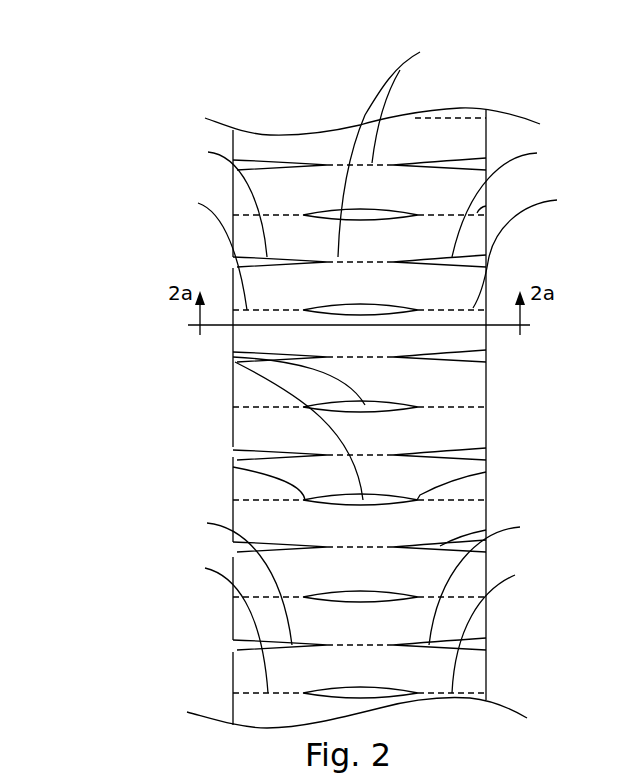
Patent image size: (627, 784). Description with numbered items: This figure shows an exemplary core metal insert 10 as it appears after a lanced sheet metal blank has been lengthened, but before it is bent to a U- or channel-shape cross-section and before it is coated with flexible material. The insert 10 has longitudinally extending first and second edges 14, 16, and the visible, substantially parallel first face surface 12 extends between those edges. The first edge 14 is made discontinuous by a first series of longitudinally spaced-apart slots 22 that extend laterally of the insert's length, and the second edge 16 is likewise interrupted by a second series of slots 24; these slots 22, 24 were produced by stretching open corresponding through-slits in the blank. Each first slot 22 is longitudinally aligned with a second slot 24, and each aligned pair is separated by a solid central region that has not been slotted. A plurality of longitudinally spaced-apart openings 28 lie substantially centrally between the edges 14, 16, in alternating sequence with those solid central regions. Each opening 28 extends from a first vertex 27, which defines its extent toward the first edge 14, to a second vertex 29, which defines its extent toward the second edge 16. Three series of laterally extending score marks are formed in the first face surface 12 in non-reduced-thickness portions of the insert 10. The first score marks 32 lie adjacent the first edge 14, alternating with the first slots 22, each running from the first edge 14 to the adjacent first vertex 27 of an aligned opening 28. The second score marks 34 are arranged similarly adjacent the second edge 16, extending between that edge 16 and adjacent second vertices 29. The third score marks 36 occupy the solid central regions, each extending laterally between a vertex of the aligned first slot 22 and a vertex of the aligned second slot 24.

The core metal insert 10 is at (180, 96).
The first face surface 12 is at (357, 740).
The first edge 14 is at (233, 433).
The second edge 16 is at (486, 386).
The first slots 22 is at (240, 158).
The second slots 24 is at (556, 159).
The first vertex 27 is at (233, 467).
The openings 28 is at (233, 357).
The second vertex 29 is at (486, 472).
The first score marks 32 is at (243, 212).
The second score marks 34 is at (462, 597).
The third score marks 36 is at (420, 52).